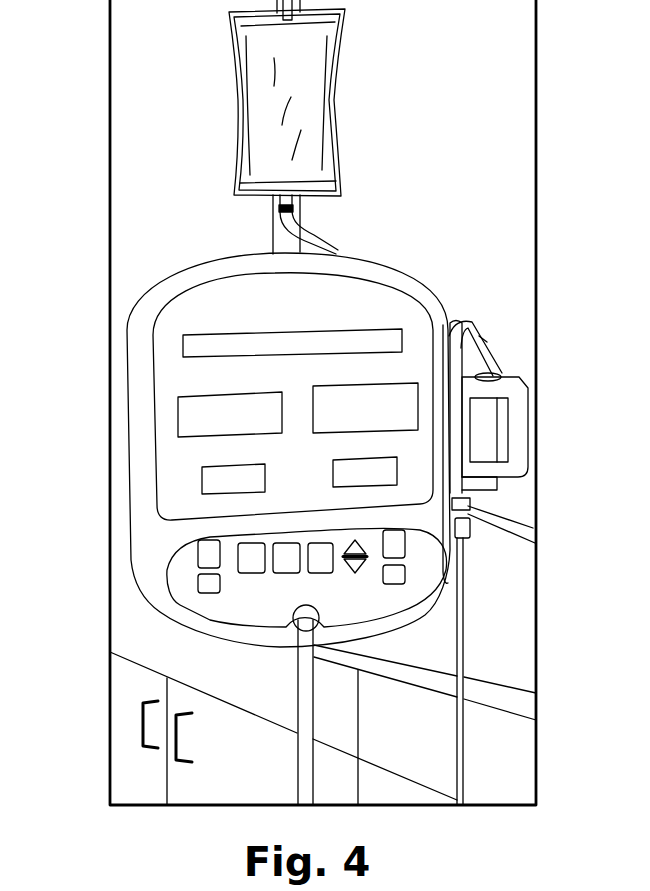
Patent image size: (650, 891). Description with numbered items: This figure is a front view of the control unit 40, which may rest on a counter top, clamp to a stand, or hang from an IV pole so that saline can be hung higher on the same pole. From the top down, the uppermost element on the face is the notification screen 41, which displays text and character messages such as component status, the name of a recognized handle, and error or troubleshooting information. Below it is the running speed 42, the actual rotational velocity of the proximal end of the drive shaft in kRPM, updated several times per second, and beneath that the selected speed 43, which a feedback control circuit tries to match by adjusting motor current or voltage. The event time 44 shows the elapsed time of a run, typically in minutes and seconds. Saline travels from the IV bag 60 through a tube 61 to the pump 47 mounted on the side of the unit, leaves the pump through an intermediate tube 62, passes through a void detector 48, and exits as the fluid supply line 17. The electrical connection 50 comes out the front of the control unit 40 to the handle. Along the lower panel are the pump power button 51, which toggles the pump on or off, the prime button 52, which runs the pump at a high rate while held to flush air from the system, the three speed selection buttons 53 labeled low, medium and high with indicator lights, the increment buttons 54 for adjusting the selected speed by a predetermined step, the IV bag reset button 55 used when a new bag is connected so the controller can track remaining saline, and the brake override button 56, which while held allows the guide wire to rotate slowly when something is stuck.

The fluid supply line 17 is at (464, 740).
The control unit 40 is at (191, 236).
The notification screen 41 is at (340, 343).
The running speed 42 is at (183, 346).
The selected speed 43 is at (178, 420).
The event time 44 is at (418, 383).
The pump 47 is at (516, 430).
The void detector 48 is at (470, 532).
The electrical connection 50 is at (320, 718).
The pump power button 51 is at (198, 556).
The prime button 52 is at (198, 586).
The speed selection buttons 53 is at (318, 575).
The increment buttons 54 is at (358, 573).
The IV bag reset button 55 is at (406, 540).
The brake override button 56 is at (406, 575).
The IV bag 60 is at (336, 72).
The tube 61 is at (468, 323).
The intermediate tube 62 is at (535, 543).